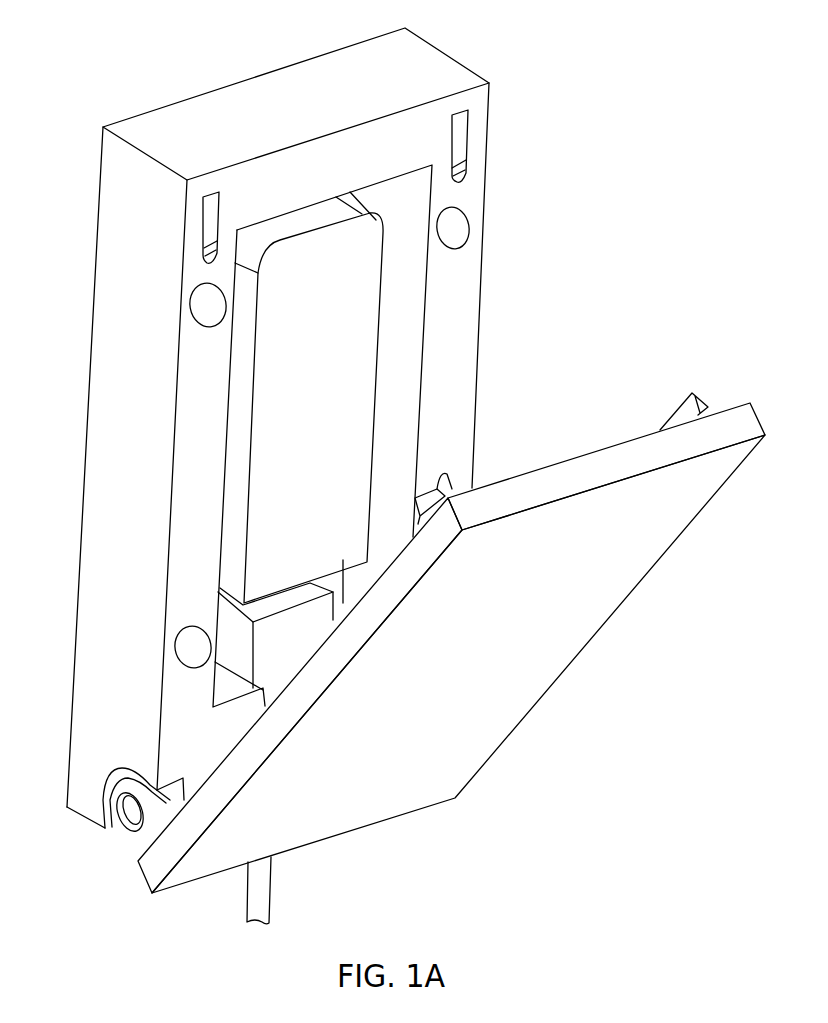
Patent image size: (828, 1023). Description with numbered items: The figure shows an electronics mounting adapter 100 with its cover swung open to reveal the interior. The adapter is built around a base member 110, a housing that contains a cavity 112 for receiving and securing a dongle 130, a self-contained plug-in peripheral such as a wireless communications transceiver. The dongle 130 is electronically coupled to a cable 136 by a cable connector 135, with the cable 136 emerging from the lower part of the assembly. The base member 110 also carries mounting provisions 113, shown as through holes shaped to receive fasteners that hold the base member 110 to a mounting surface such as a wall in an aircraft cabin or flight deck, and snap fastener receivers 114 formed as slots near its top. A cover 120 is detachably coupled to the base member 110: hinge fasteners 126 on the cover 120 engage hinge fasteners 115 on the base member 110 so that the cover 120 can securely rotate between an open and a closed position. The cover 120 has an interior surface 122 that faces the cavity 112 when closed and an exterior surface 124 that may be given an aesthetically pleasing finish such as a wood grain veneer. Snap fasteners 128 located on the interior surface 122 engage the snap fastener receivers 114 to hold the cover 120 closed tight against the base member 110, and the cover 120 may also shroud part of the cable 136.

The electronics mounting adapter 100 is at (78, 63).
The base member 110 is at (113, 201).
The cavity 112 is at (410, 331).
The mounting provisions 113 is at (203, 305).
The snap fastener receivers 114 is at (208, 192).
The hinge fasteners 115 is at (103, 788).
The cover 120 is at (722, 473).
The interior surface 122 is at (606, 352).
The exterior surface 124 is at (488, 742).
The hinge fasteners 126 is at (133, 837).
The snap fasteners 128 is at (448, 473).
The dongle 130 is at (367, 372).
The cable connector 135 is at (262, 648).
The cable 136 is at (272, 890).